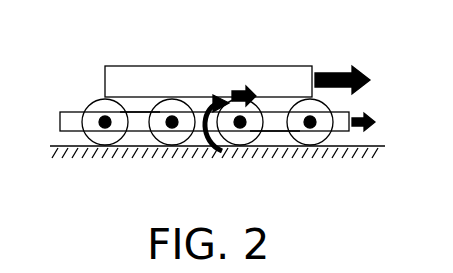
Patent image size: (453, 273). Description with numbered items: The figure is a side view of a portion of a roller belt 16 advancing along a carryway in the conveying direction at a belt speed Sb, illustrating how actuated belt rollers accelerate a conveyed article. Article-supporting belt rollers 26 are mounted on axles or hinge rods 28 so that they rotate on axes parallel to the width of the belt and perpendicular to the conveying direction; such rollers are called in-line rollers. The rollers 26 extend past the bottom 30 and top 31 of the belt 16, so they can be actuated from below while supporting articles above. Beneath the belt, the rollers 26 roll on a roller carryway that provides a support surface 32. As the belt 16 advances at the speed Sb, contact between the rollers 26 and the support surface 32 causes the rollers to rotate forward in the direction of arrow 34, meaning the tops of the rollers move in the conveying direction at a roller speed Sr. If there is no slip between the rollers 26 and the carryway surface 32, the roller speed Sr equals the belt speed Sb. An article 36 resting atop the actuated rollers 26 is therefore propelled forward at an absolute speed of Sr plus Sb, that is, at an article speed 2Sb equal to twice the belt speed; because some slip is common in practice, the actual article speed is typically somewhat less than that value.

The roller belt 16 is at (72, 111).
The belt rollers 26 is at (97, 140).
The axles or hinge rods 28 is at (108, 125).
The bottom of the belt 30 is at (275, 131).
The top of the belt 31 is at (138, 112).
The support surface 32 is at (382, 147).
The arrow indicating roller rotation direction 34 is at (221, 152).
The article 36 is at (172, 70).
The roller speed Sr is at (240, 90).
The belt speed Sb is at (365, 132).
The article speed 2Sb is at (337, 72).